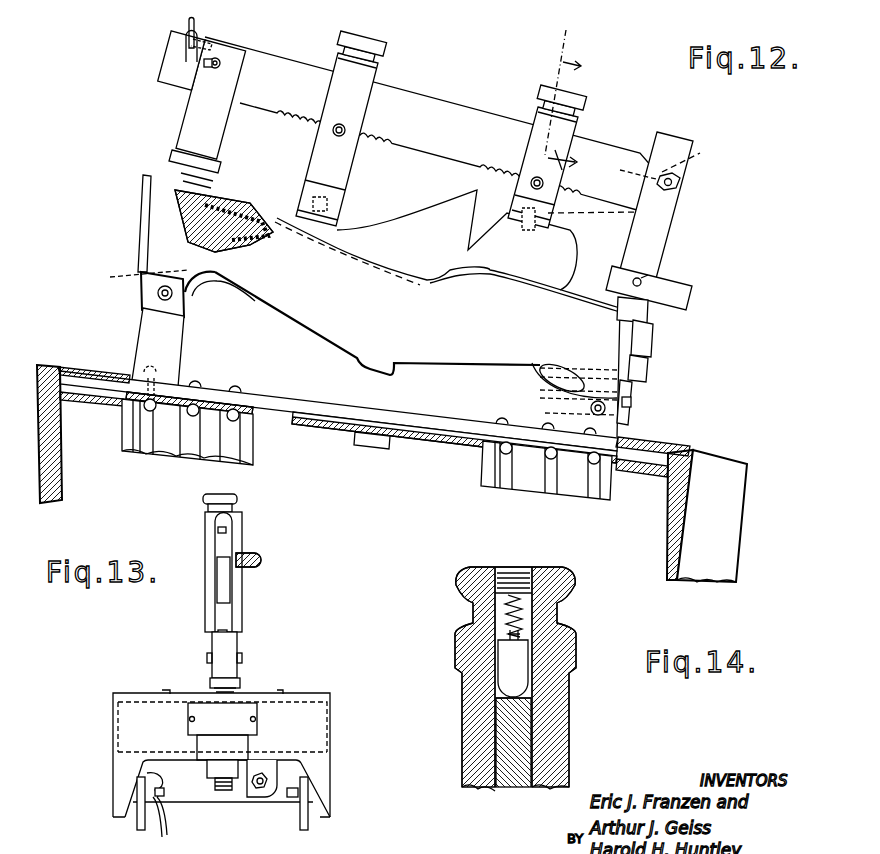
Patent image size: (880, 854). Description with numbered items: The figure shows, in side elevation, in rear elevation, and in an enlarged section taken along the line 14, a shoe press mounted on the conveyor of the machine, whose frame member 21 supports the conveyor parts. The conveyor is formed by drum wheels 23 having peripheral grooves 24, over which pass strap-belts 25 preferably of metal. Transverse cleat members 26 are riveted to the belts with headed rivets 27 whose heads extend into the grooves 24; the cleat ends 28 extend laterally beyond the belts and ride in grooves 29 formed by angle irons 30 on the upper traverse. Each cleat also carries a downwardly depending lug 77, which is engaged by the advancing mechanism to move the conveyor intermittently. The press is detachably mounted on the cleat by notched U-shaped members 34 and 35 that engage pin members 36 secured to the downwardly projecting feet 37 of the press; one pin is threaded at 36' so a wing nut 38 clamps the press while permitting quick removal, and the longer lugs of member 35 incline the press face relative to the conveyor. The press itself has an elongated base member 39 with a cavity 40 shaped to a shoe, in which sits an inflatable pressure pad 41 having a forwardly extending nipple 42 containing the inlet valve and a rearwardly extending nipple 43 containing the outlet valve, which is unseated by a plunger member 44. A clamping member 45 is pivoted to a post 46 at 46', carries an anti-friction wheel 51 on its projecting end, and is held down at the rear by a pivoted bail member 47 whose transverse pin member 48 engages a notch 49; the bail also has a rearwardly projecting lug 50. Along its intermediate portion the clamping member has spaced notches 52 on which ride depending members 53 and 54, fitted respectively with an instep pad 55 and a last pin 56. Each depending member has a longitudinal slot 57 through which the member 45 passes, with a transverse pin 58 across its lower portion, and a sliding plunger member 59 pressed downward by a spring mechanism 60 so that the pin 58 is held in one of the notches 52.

In FIG. 12, the section line 14— 14 is at (580, 105).
In FIG. 12, the channel member 21 is at (65, 368).
In FIG. 12, the drum wheels 23 is at (128, 465).
In FIG. 12, the peripheral grooves 24 is at (575, 502).
In FIG. 12, the strap-belt 25 is at (250, 427).
In FIG. 12, the transverse cleat members 26 is at (410, 428).
In FIG. 12, the headed rivets 27 is at (203, 393).
In FIG. 12, the cleat ends 28 is at (118, 376).
In FIG. 12, the grooves 29 is at (105, 397).
In FIG. 12, the angle irons 30 is at (55, 457).
In FIG. 12, the notched U-shaped member 34 is at (500, 440).
In FIG. 13, the notched U-shaped member 34 is at (308, 822).
In FIG. 12, the notched U-shaped member 35 is at (163, 347).
In FIG. 12, the pin members 36 is at (358, 332).
In FIG. 13, the pin members 36 is at (282, 820).
In FIG. 13, the threaded pin portion 36' is at (115, 777).
In FIG. 12, the downwardly projecting feet 37 is at (184, 308).
In FIG. 13, the downwardly projecting feet 37 is at (330, 796).
In FIG. 13, the wing nut 38 is at (165, 815).
In FIG. 12, the elongated base member 39 is at (325, 300).
In FIG. 12, the cavity 40 is at (205, 214).
In FIG. 12, the inflatable pressure pad 41 is at (240, 212).
In FIG. 12, the forwardly extending nipple 42 is at (140, 285).
In FIG. 12, the rearwardly extending nipple 43 is at (632, 417).
In FIG. 13, the rearwardly extending nipple 43 is at (252, 785).
In FIG. 12, the plunger member 44 is at (636, 402).
In FIG. 13, the plunger member 44 is at (258, 790).
In FIG. 12, the clamping member 45 is at (286, 70).
In FIG. 13, the clamping member 45 is at (226, 577).
In FIG. 14, the clamping member 45 is at (520, 720).
In FIG. 12, the post 46 is at (192, 109).
In FIG. 12, the pivot 46' is at (233, 35).
In FIG. 12, the pivoted bail member 47 is at (676, 232).
In FIG. 13, the pivoted bail member 47 is at (233, 535).
In FIG. 12, the transverse pin member 48 is at (682, 180).
In FIG. 13, the transverse pin member 48 is at (262, 562).
In FIG. 12, the notch 49 is at (705, 150).
In FIG. 12, the rearwardly projecting lug 50 is at (690, 285).
In FIG. 13, the rearwardly projecting lug 50 is at (212, 648).
In FIG. 12, the anti-friction wheel 51 is at (182, 32).
In FIG. 12, the spaced notches 52 is at (290, 118).
In FIG. 12, the depending member 53 is at (370, 80).
In FIG. 12, the depending member 54 is at (538, 112).
In FIG. 13, the depending member 54 is at (242, 518).
In FIG. 14, the depending member 54 is at (583, 760).
In FIG. 12, the instep pad 55 is at (330, 208).
In FIG. 12, the last pin 56 is at (552, 222).
In FIG. 14, the longitudinal slot 57 is at (533, 693).
In FIG. 12, the transverse pin 58 is at (566, 158).
In FIG. 13, the sliding plunger member 59 is at (218, 530).
In FIG. 14, the sliding plunger member 59 is at (520, 660).
In FIG. 14, the spring mechanism 60 is at (535, 603).
In FIG. 12, the downwardly depending lug 77 is at (377, 450).